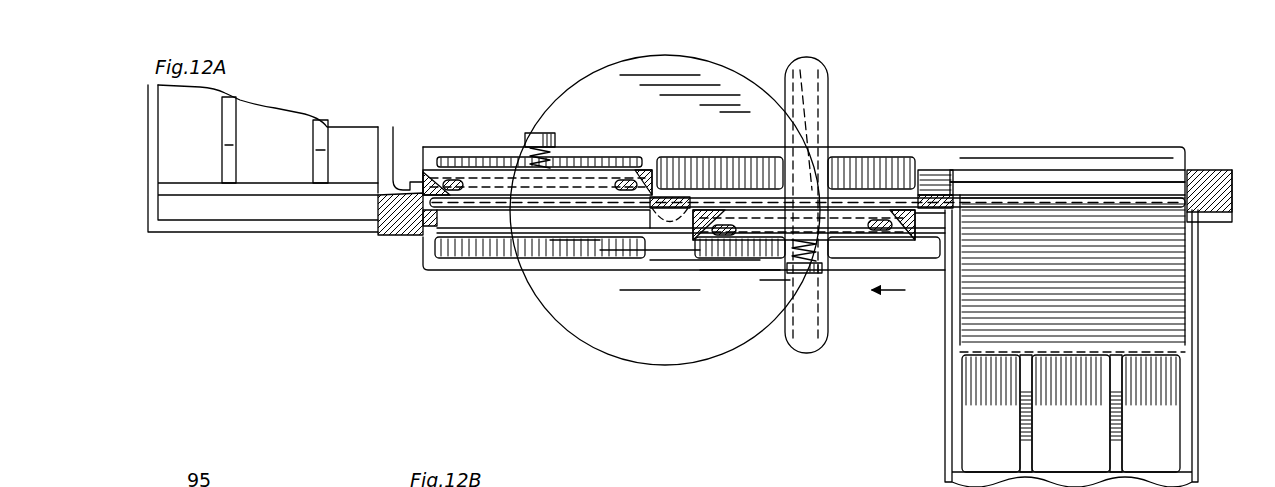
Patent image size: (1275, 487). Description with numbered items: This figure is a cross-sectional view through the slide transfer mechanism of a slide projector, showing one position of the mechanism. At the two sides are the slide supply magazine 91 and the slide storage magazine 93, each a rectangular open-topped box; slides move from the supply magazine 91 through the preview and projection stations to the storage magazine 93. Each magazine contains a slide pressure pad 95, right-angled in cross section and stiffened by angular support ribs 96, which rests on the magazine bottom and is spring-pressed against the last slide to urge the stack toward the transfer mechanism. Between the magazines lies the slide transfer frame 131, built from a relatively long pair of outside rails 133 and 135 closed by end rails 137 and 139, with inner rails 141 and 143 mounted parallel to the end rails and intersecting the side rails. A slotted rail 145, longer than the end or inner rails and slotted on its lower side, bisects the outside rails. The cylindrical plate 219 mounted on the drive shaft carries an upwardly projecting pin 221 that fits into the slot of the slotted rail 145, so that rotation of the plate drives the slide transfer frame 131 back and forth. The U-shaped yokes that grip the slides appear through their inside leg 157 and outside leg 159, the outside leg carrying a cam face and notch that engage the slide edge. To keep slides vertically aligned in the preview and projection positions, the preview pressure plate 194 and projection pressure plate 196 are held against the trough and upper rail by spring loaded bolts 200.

The slide supply magazine 91 is at (1197, 421).
The slide storage magazine 93 is at (148, 163).
The slide pressure pad 95 is at (352, 137).
The angular support rib 96 is at (318, 133).
The slide transfer frame 131 is at (528, 282).
The outside rail 133 is at (480, 270).
The outside rail 135 is at (470, 150).
The end rail 137 is at (1178, 150).
The end rail 139 is at (425, 265).
The inner rail 141 is at (965, 170).
The inner rail 143 is at (655, 245).
The slotted rail 145 is at (826, 340).
The inside leg 157 is at (675, 198).
The outside leg 159 is at (395, 236).
The preview pressure plate 194 is at (858, 240).
The projection pressure plate 196 is at (488, 185).
The spring loaded bolt 200 is at (545, 133).
The cylindrical plate 219 is at (608, 333).
The upwardly projecting pin 221 is at (800, 198).